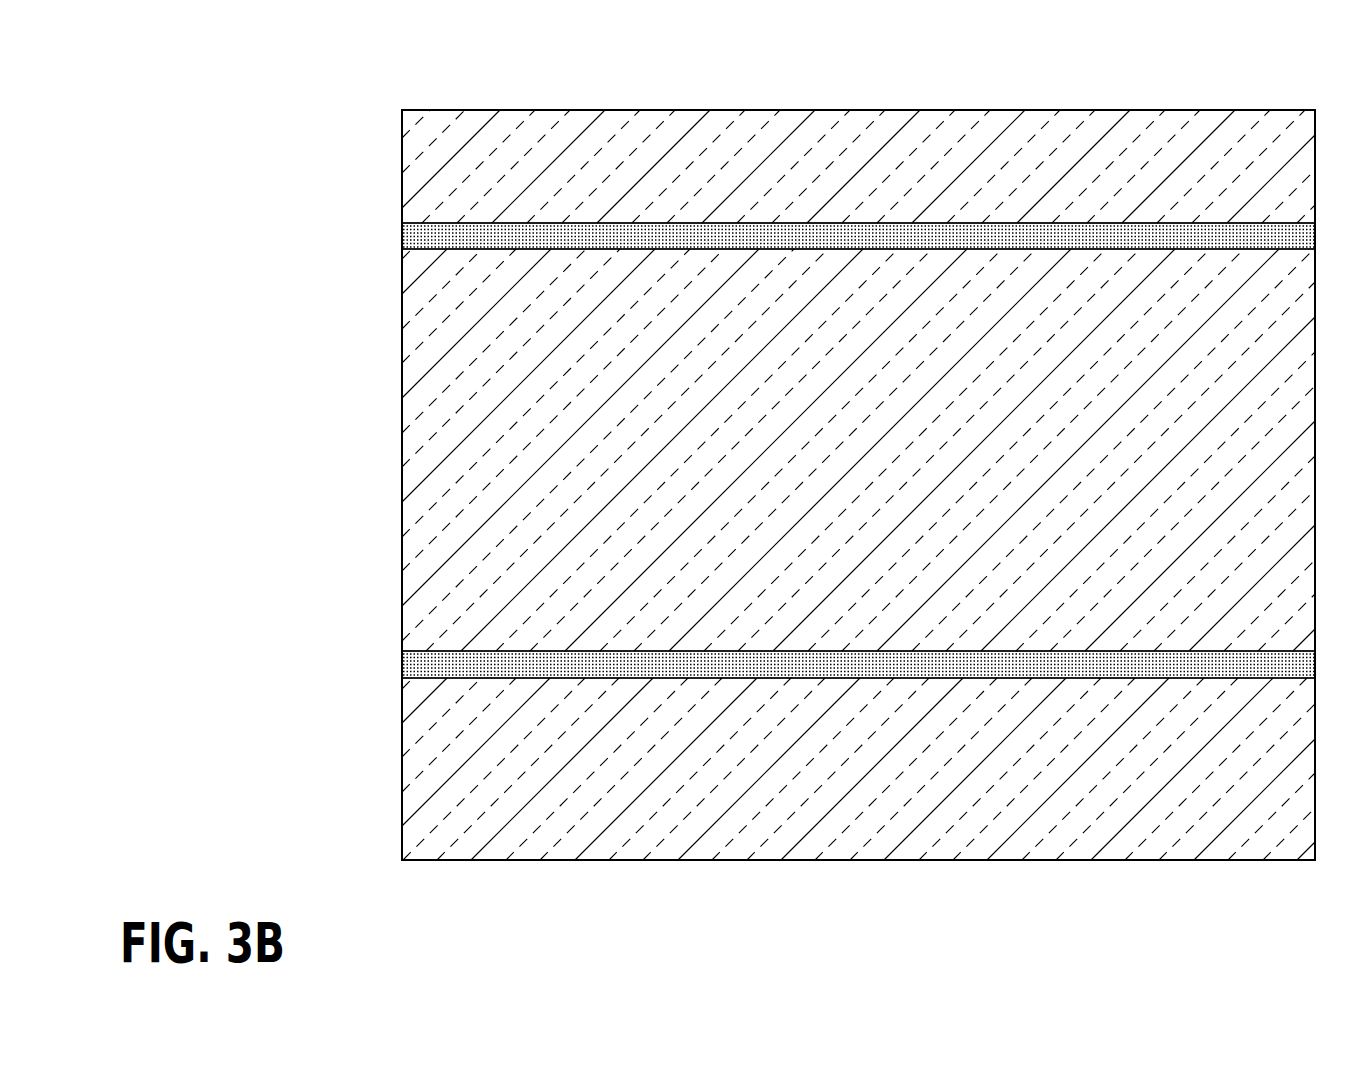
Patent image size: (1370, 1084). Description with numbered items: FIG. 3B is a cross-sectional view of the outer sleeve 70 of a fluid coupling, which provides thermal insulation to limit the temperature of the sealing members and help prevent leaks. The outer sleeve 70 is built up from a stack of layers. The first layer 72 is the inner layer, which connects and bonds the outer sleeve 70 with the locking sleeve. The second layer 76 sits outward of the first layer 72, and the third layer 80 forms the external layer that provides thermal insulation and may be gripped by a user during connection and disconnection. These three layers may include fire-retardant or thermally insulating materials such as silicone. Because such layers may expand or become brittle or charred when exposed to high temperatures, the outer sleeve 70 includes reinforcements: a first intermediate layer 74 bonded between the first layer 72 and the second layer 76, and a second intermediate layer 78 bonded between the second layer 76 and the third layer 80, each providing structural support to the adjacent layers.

The outer sleeve 70 is at (347, 89).
The first layer 72 is at (427, 766).
The first intermediate layer 74 is at (405, 667).
The second layer 76 is at (455, 448).
The second intermediate layer 78 is at (415, 237).
The third layer 80 is at (463, 170).